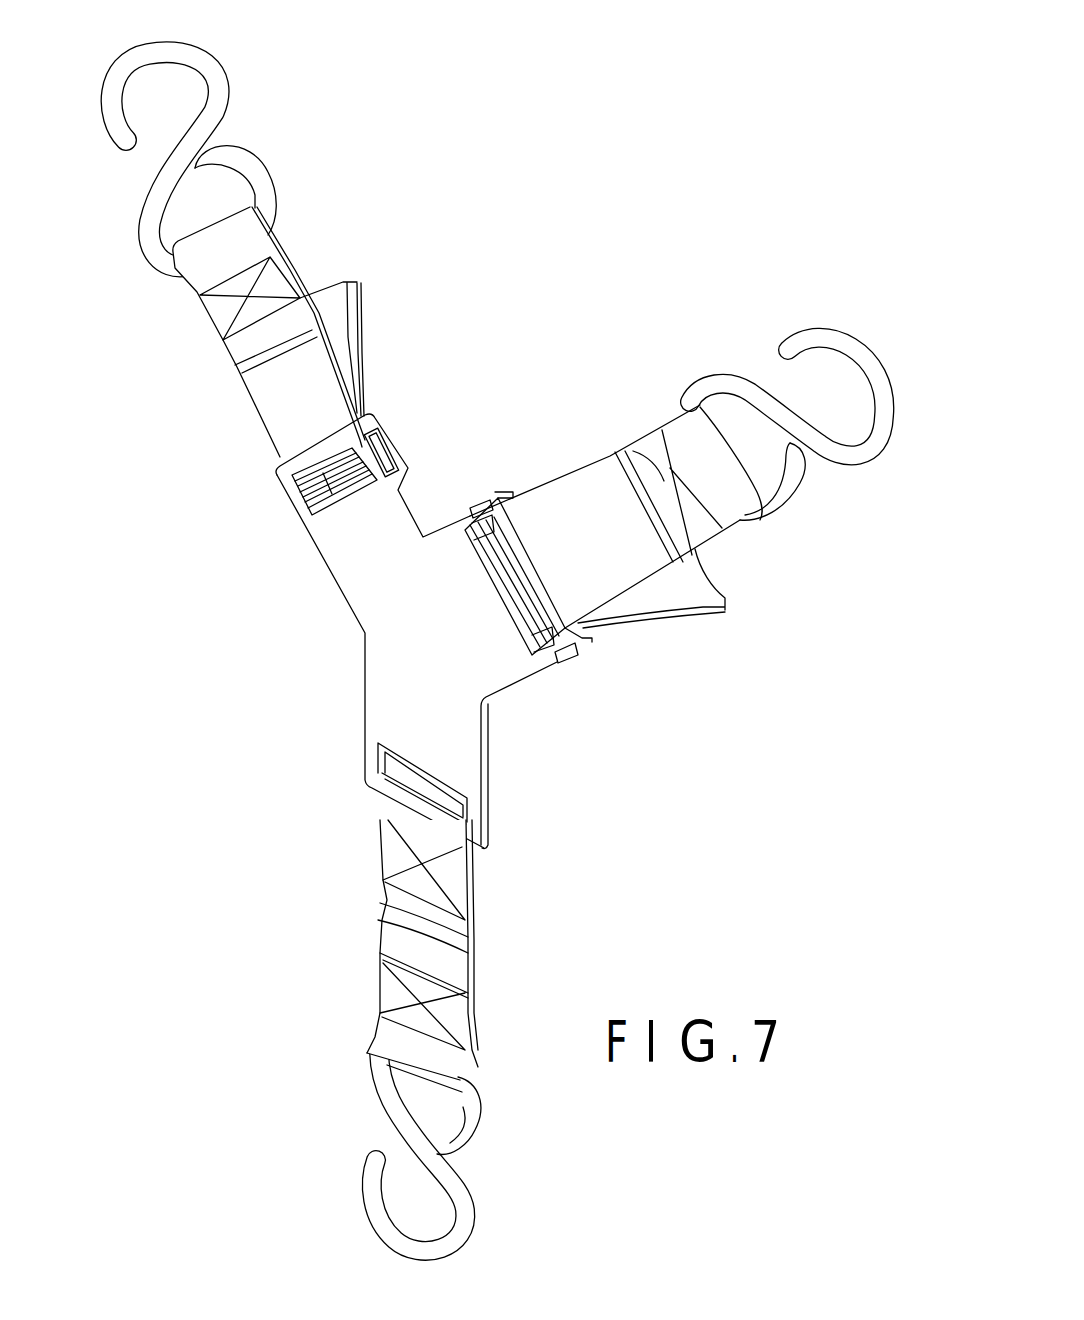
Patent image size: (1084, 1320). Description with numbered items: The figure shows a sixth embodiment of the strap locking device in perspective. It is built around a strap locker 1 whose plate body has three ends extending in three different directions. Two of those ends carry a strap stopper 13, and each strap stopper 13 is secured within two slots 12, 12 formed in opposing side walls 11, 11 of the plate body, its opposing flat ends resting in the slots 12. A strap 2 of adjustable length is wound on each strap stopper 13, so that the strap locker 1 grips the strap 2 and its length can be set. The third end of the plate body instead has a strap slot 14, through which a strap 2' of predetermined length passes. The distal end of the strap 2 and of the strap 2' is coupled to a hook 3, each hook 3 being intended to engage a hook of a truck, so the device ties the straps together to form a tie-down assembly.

The strap locker 1 is at (367, 578).
The strap 2 is at (637, 510).
The strap 2' is at (462, 987).
The hook 3 is at (212, 68).
The side wall 11 is at (380, 418).
The slot 12 is at (382, 476).
The strap stopper 13 is at (500, 540).
The strap slot 14 is at (437, 797).